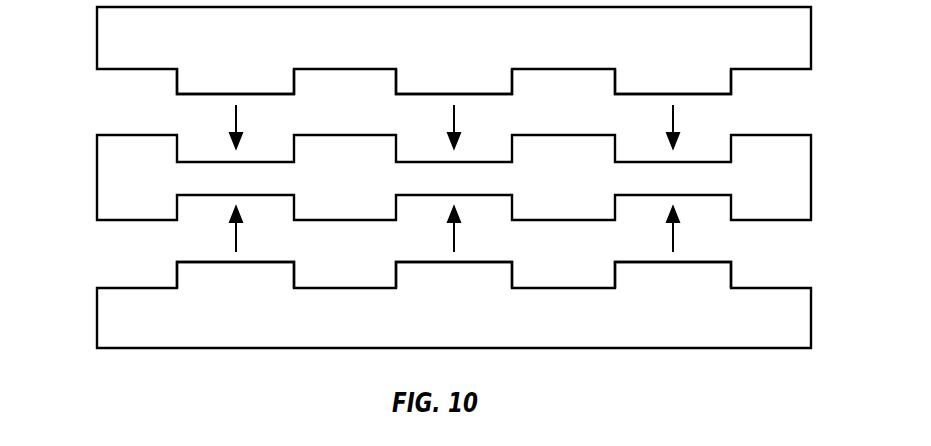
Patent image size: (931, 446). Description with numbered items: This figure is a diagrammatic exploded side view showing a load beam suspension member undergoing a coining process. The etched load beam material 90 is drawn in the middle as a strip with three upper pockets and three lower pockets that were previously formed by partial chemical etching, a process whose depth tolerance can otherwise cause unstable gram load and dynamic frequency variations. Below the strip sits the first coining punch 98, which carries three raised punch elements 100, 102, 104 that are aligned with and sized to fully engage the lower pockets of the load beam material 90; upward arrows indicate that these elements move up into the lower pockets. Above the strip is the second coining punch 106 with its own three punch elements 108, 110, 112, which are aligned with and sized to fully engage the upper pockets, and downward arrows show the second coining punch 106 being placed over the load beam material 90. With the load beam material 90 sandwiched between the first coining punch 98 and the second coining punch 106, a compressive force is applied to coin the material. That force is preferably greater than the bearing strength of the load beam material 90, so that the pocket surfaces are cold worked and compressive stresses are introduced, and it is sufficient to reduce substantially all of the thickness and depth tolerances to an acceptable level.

The load beam material 90 is at (97, 177).
The first coining punch 98 is at (97, 318).
The punch element 100 is at (177, 275).
The punch element 102 is at (396, 275).
The punch element 104 is at (615, 275).
The second coining punch 106 is at (97, 37).
The punch element 108 is at (177, 80).
The punch element 110 is at (396, 80).
The punch element 112 is at (615, 80).